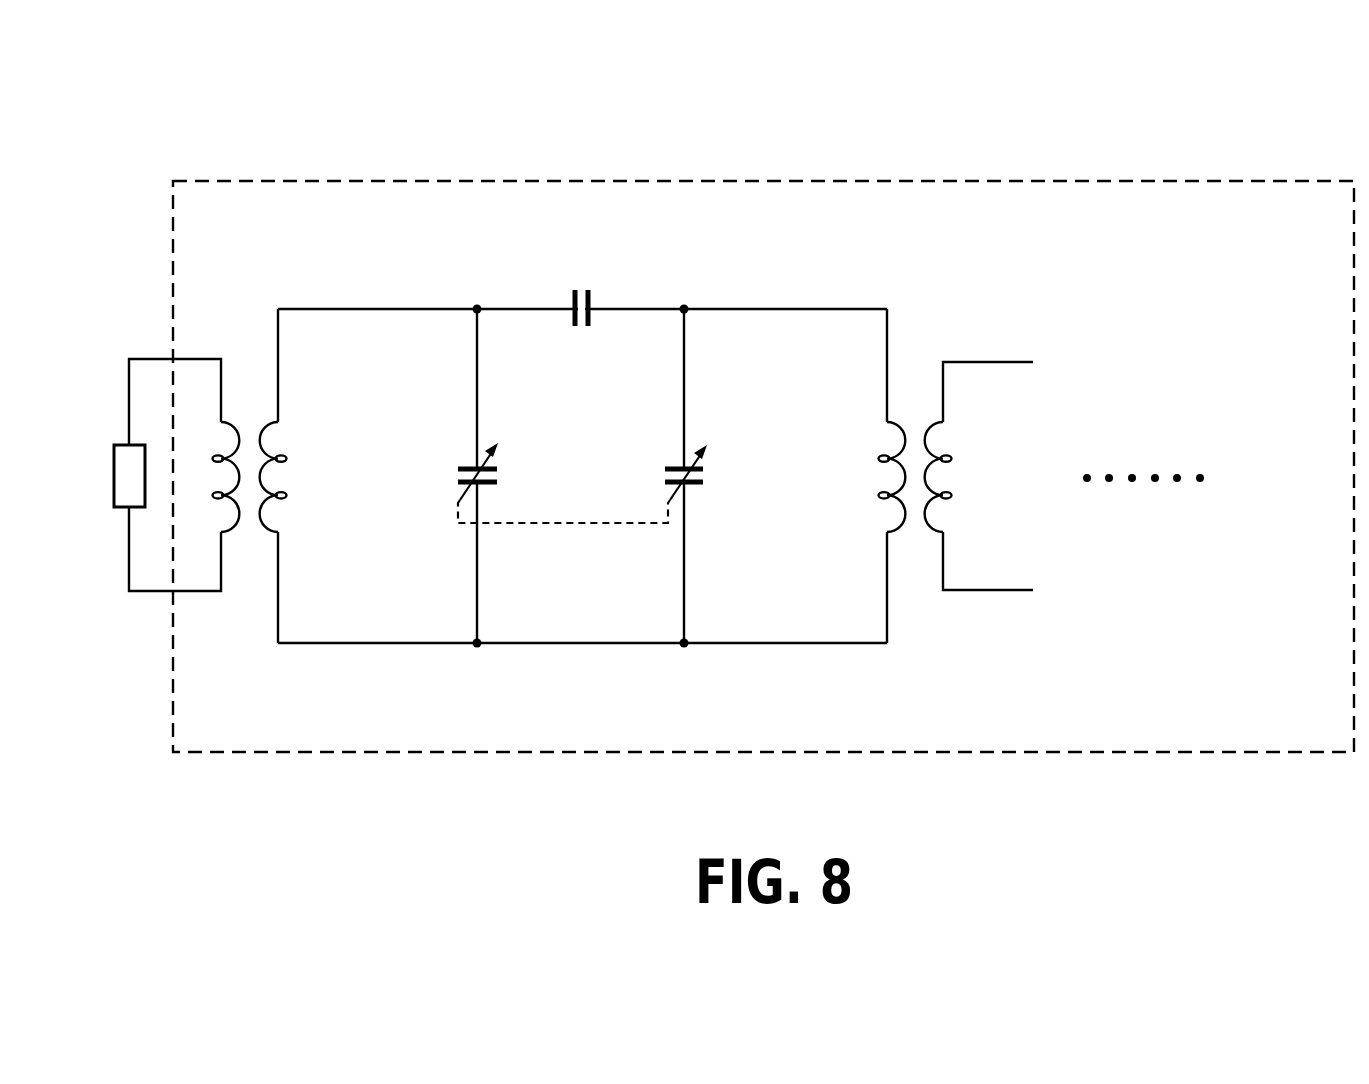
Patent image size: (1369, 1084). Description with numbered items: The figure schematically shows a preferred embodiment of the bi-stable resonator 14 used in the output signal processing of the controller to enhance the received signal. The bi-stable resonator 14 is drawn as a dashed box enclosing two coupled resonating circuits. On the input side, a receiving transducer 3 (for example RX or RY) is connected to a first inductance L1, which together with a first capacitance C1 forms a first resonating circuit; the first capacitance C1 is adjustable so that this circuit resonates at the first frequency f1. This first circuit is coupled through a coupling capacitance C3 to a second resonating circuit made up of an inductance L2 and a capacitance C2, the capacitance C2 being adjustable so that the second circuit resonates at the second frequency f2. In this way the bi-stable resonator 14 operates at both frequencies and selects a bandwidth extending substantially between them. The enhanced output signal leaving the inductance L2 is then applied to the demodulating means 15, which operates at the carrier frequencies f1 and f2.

The receiving transducer 3 is at (115, 480).
The bi-stable resonator 14 is at (1152, 180).
The demodulating means 15 is at (1171, 452).
The first inductance L1 is at (252, 489).
The inductance L2 is at (918, 492).
The first capacitance C1 is at (493, 473).
The capacitance C2 is at (703, 467).
The coupling capacitance C3 is at (590, 290).